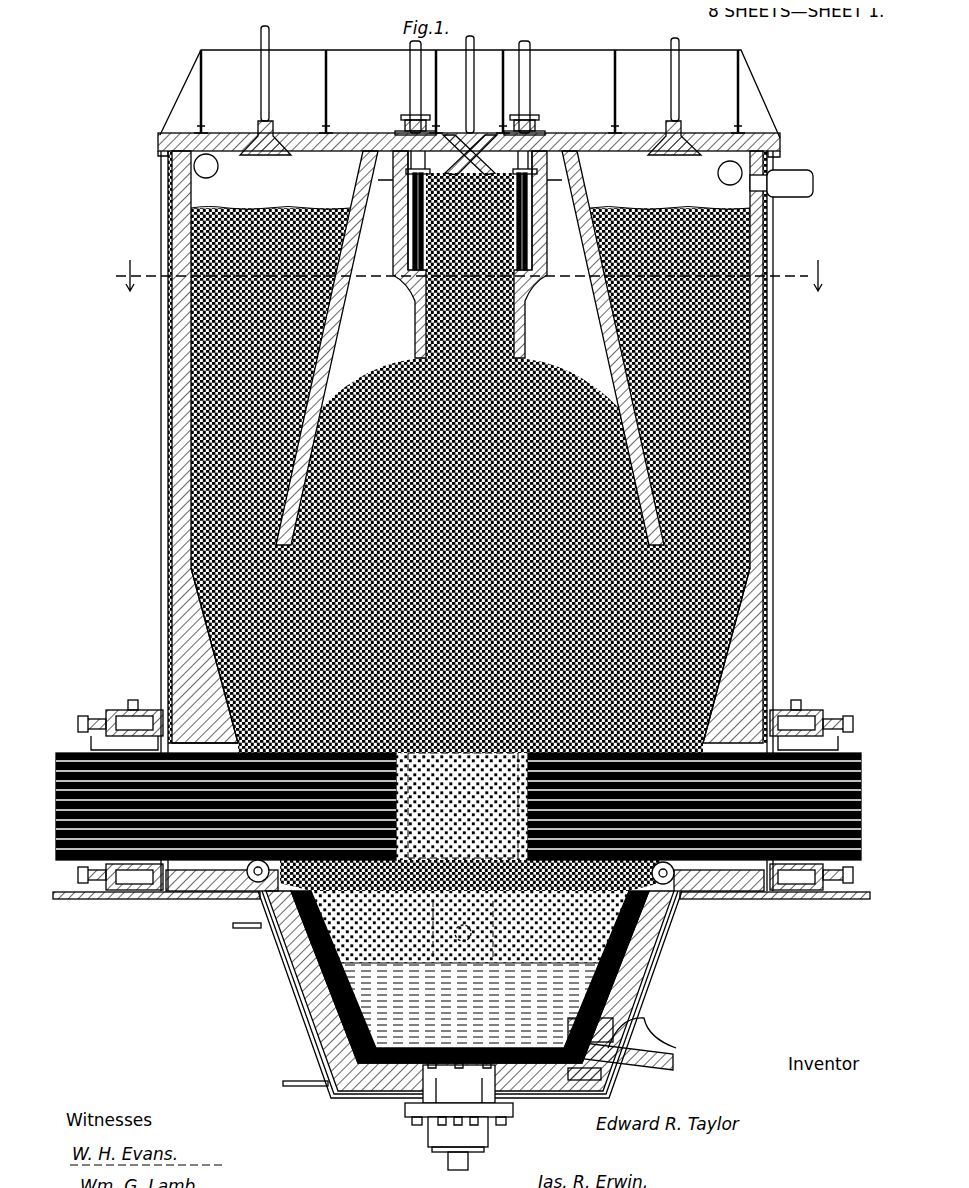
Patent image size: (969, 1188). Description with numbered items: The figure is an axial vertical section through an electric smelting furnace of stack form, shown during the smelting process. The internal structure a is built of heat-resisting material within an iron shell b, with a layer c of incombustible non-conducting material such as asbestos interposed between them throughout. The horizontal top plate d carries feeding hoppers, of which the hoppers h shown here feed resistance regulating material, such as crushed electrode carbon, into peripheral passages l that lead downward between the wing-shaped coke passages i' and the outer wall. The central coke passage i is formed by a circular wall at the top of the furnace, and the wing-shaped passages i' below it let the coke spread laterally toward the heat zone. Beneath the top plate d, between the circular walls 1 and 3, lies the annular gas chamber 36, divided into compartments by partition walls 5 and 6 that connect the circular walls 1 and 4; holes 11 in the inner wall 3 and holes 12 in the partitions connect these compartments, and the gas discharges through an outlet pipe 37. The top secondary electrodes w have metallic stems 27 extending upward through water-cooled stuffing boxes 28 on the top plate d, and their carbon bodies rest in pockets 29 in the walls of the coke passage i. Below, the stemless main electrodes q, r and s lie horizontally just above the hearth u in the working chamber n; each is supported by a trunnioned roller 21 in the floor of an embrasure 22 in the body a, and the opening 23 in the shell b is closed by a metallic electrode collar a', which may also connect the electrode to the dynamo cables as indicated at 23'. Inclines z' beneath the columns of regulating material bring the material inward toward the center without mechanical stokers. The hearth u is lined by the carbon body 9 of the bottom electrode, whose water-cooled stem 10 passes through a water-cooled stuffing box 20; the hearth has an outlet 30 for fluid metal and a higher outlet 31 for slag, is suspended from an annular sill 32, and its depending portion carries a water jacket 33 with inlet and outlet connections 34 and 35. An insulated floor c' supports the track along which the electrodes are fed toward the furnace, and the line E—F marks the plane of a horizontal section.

The circular wall 1 is at (153, 181).
The inner wall 3 is at (326, 342).
The circular wall 4 is at (407, 333).
The partition wall 5 is at (309, 195).
The partition wall 6 is at (651, 195).
The carbon body 9 is at (350, 988).
The water-cooled metallic stem 10 is at (442, 1144).
The holes 11 is at (370, 160).
The holes 12 is at (210, 160).
The water-cooled stuffing-box 20 is at (427, 1115).
The trunnioned horizontal roller 21 is at (238, 880).
The embrasure 22 is at (187, 740).
The opening 23 is at (465, 813).
The cable connection 23' is at (472, 696).
The metallic stem 27 is at (402, 77).
The water-cooled stuffing box 28 is at (393, 111).
The pockets 29 is at (392, 250).
The outlet 30 is at (648, 1041).
The slag outlet 31 is at (466, 923).
The annular metallic sill 32 is at (720, 893).
The water jacket 33 is at (292, 985).
The inlet connection 34 is at (273, 1077).
The outlet connection 35 is at (236, 921).
The annular gas chamber 36 is at (274, 192).
The outlet pipe 37 is at (805, 172).
The feeding hopper h is at (470, 90).
The non-conducting layer c is at (296, 187).
The top plate d is at (150, 134).
The internal structure a is at (151, 447).
The metallic shell b is at (164, 237).
The insulated floor c' is at (461, 921).
The electrode collar a' is at (457, 707).
The coke passage i is at (333, 341).
The wing-shaped passage i' is at (470, 710).
The peripheral passage l is at (765, 359).
The secondary electrode w is at (404, 229).
The incline z' is at (455, 655).
The working chamber n is at (441, 724).
The main electrode s is at (480, 734).
The main electrode q is at (429, 802).
The main electrode r is at (489, 797).
The hearth u is at (470, 1005).
The section line end E is at (283, 275).
The section line end F is at (655, 275).